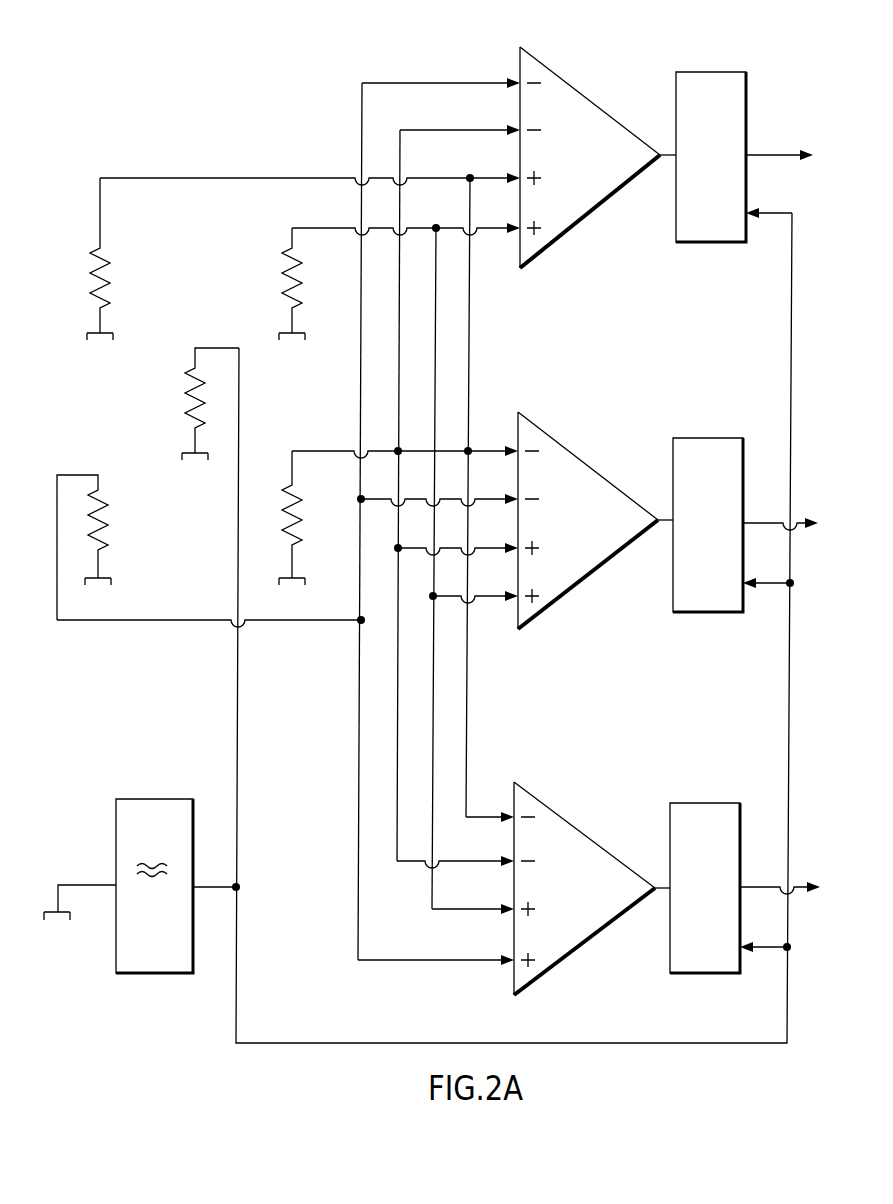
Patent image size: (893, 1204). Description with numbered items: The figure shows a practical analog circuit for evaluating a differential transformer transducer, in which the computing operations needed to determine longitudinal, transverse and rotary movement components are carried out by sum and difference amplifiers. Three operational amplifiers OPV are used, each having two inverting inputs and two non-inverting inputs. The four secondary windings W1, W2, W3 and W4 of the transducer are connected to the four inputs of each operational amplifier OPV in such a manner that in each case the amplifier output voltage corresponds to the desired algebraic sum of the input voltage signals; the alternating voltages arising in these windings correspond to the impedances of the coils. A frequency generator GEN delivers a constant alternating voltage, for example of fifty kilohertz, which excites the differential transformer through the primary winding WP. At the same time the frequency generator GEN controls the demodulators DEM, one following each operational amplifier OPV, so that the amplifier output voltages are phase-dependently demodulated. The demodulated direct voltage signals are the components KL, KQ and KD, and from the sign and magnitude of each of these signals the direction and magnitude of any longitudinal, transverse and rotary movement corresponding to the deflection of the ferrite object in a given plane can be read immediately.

The secondary winding W1 is at (117, 259).
The secondary winding W2 is at (309, 284).
The secondary winding W3 is at (308, 518).
The secondary winding W4 is at (211, 551).
The primary winding WP is at (182, 404).
The longitudinal component KL is at (779, 142).
The transverse component KQ is at (785, 511).
The rotary component KD is at (783, 876).
The operational amplifier OPV is at (388, 521).
The demodulator DEM is at (732, 522).
The frequency generator GEN is at (142, 886).